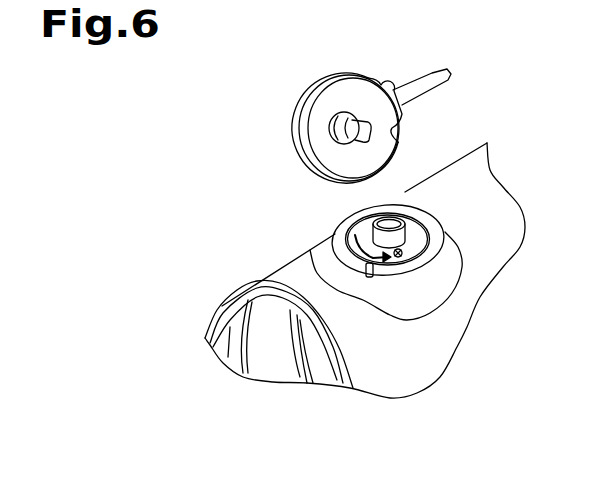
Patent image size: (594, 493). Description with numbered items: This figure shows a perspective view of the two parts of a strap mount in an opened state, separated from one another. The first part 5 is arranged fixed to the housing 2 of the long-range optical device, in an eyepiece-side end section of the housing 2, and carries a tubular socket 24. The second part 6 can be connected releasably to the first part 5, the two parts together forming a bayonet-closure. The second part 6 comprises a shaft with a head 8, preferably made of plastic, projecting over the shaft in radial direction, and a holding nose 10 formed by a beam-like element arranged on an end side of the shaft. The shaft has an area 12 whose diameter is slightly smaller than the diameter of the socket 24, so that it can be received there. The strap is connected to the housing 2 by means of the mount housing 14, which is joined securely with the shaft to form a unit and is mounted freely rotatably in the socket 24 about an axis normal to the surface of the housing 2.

The housing 2 is at (472, 193).
The first part 5 is at (414, 236).
The second part 6 is at (274, 116).
The head 8 is at (300, 90).
The holding nose 10 is at (370, 128).
The area 12 is at (363, 122).
The mount housing 14 is at (292, 127).
The socket 24 is at (377, 211).